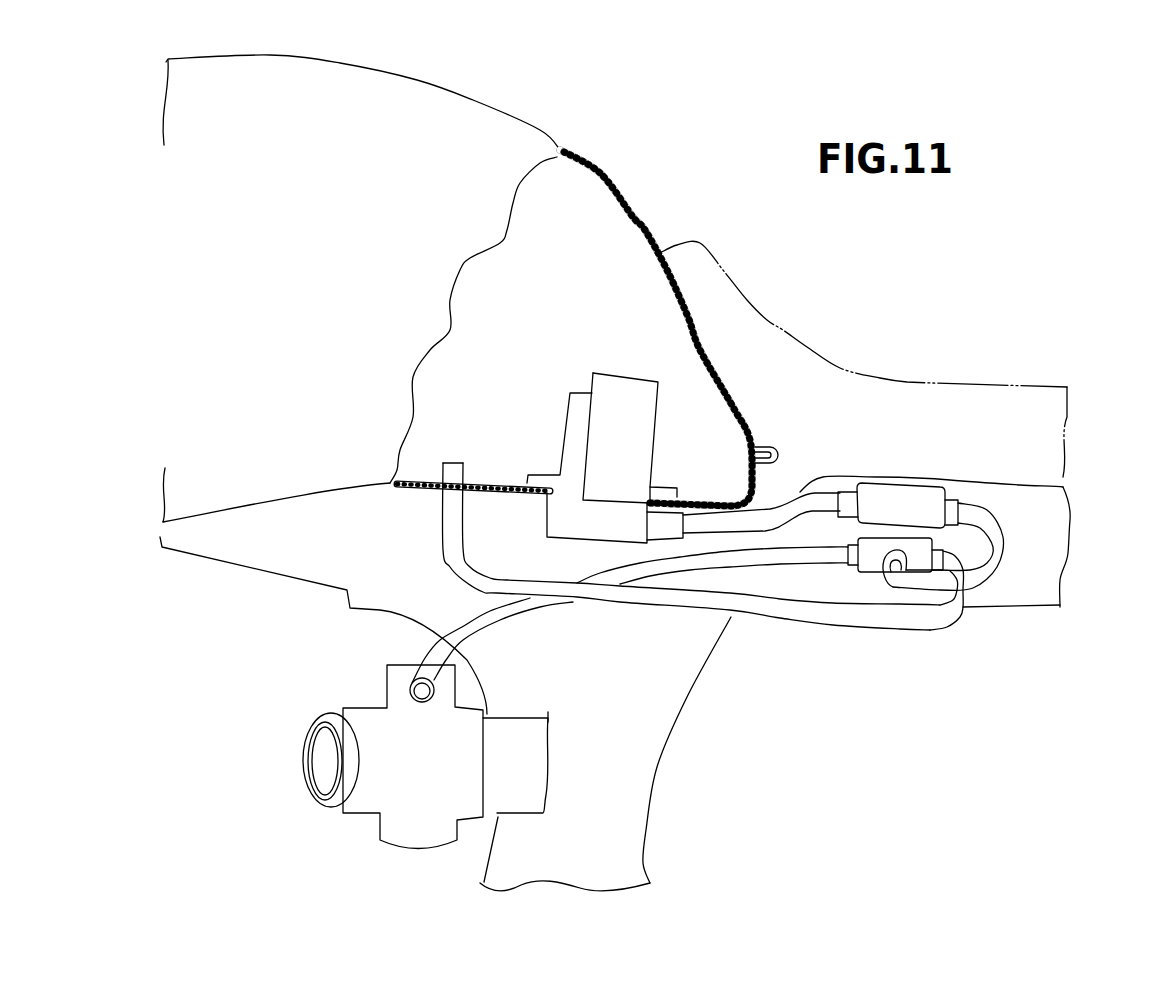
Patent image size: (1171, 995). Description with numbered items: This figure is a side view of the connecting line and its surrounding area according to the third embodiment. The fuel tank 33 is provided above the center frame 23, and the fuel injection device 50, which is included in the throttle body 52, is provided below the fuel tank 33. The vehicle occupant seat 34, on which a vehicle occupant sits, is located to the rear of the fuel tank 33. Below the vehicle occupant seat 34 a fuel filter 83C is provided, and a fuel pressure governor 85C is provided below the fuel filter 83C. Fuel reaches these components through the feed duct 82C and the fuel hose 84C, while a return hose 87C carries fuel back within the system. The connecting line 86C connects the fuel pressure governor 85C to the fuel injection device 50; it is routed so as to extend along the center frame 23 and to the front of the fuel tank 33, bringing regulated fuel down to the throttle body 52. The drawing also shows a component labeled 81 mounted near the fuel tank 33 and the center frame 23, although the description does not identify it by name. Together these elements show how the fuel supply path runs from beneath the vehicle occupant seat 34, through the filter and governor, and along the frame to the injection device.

The center frame 23 is at (1045, 588).
The fuel tank 33 is at (505, 110).
The vehicle occupant seat 34 is at (967, 382).
The fuel injection device 50 is at (373, 767).
The throttle body 52 is at (423, 825).
The sensor unit 81 is at (623, 407).
The feed duct 82C is at (812, 497).
The fuel filter 83C is at (902, 498).
The fuel hose 84C is at (1010, 543).
The fuel pressure governor 85C is at (873, 563).
The connecting line 86C is at (437, 660).
The return hose 87C is at (927, 620).